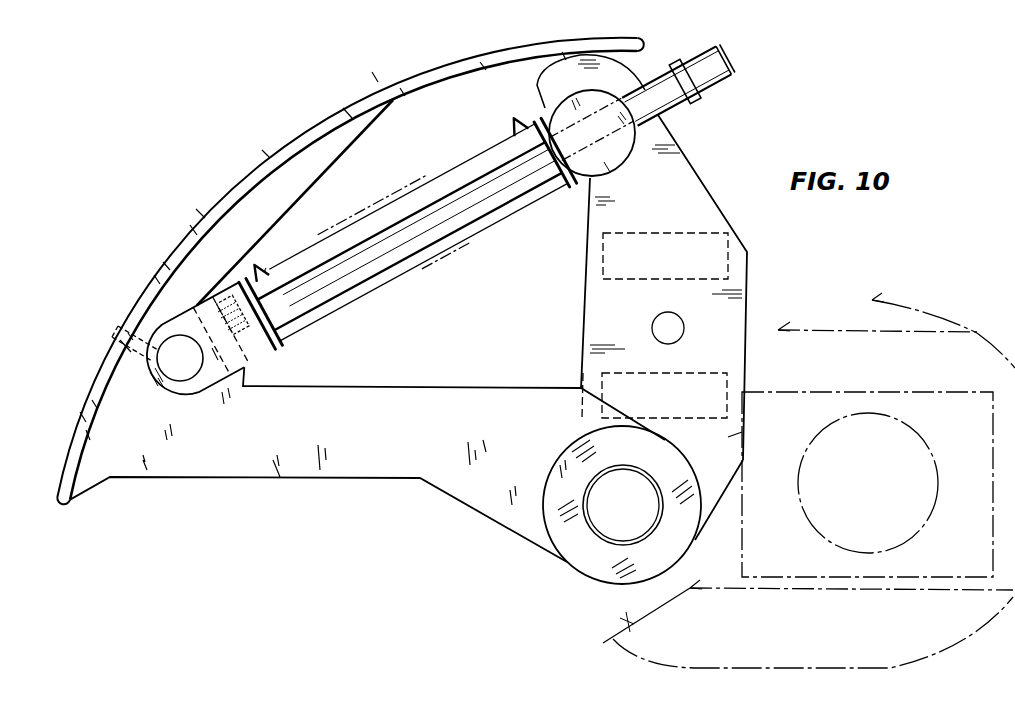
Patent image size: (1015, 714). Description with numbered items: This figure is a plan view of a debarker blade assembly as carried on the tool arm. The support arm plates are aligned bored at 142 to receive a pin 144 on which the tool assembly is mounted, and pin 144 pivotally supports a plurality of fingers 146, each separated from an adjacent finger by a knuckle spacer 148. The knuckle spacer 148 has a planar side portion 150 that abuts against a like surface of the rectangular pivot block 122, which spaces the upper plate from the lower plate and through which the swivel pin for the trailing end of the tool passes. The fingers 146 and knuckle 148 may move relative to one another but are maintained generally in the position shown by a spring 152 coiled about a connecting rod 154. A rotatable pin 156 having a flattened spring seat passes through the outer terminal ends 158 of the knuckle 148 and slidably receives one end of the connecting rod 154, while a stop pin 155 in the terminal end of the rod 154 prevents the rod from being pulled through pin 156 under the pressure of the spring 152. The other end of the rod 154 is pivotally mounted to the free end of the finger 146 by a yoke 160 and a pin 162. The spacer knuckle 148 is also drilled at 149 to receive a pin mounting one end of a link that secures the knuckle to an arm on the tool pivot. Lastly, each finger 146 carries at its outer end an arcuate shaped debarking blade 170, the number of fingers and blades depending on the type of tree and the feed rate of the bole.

The pivot block 122 is at (962, 393).
The aligned bore 142 is at (597, 538).
The pin 144 is at (633, 528).
The finger 146 is at (440, 388).
The knuckle spacer 148 is at (715, 203).
The drilled hole 149 is at (656, 324).
The planar side portion 150 is at (662, 413).
The spring 152 is at (417, 183).
The connecting rod 154 is at (497, 200).
The stop pin 155 is at (697, 108).
The rotatable pin 156 is at (612, 167).
The outer terminal end 158 is at (548, 85).
The yoke 160 is at (220, 375).
The pin 162 is at (180, 380).
The debarking blade 170 is at (148, 283).